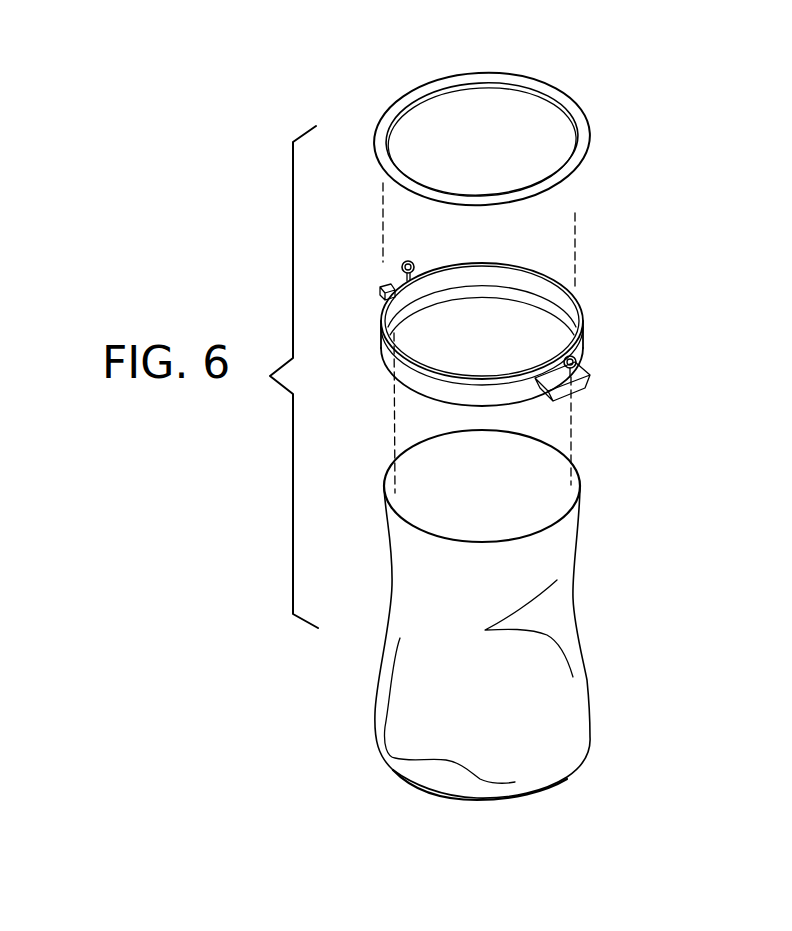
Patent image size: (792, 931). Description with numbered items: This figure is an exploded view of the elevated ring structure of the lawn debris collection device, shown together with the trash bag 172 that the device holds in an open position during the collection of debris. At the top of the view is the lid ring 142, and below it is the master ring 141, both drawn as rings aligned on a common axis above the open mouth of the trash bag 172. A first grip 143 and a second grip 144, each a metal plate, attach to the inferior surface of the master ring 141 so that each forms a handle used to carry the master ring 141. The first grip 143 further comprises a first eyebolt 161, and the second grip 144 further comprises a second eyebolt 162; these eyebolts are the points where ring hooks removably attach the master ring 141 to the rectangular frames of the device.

The master ring 141 is at (584, 312).
The lid ring 142 is at (574, 118).
The first grip 143 is at (588, 380).
The second grip 144 is at (391, 288).
The first eyebolt 161 is at (578, 360).
The second eyebolt 162 is at (414, 266).
The trash bag 172 is at (555, 613).